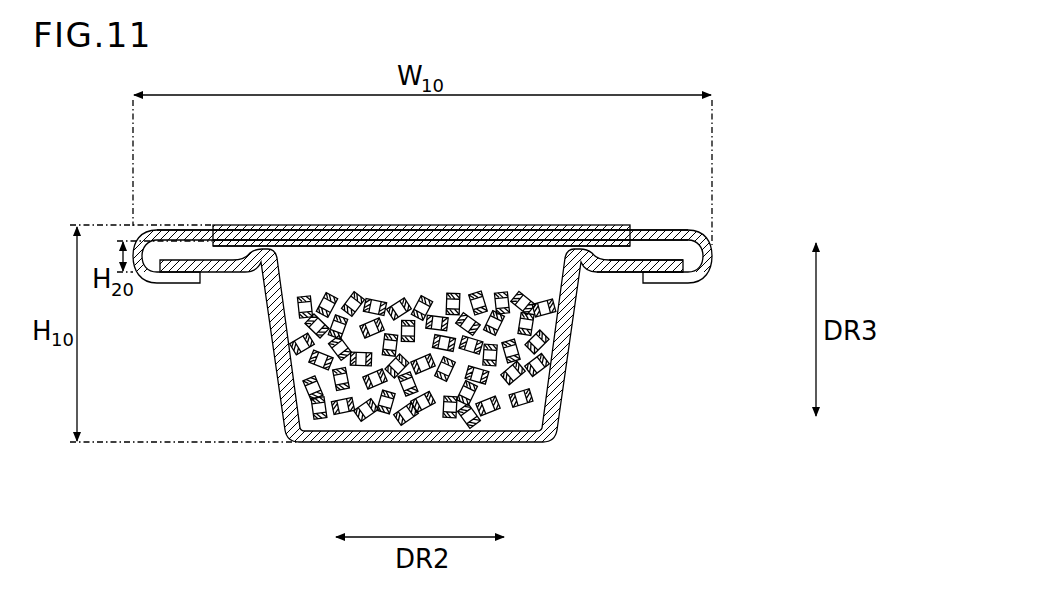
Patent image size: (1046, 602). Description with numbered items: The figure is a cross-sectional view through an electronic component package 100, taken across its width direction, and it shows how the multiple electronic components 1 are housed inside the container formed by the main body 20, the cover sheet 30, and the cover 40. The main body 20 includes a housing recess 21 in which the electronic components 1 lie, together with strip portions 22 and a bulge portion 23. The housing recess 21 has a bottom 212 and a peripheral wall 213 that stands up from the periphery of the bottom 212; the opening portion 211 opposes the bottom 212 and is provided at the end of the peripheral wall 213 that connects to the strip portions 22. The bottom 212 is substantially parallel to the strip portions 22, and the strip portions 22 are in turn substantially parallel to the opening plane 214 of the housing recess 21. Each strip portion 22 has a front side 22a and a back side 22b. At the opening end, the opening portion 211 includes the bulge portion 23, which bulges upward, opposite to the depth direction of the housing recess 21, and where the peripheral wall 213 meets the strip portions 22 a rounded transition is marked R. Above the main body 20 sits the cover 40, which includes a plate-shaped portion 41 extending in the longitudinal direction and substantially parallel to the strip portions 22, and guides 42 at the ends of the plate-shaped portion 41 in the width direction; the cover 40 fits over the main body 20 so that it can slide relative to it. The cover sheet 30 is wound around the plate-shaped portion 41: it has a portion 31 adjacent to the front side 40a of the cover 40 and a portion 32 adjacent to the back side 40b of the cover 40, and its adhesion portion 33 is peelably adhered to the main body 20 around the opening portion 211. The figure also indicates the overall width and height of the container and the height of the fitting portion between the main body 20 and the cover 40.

The electronic component package 100 is at (745, 164).
The electronic component 1 is at (479, 426).
The main body 20 is at (303, 503).
The housing recess 21 is at (295, 442).
The strip portion 22 is at (197, 276).
The front side 22a is at (665, 262).
The back side 22b is at (668, 273).
The bulge portion 23 is at (258, 273).
The opening portion 211 is at (265, 248).
The bottom 212 is at (360, 443).
The peripheral wall 213 is at (560, 375).
The opening plane 214 is at (387, 258).
The rounded corner R is at (576, 266).
The cover sheet 30 is at (632, 154).
The portion adjacent to front side of cover 31 is at (496, 226).
The portion adjacent to back side of cover 32 is at (540, 233).
The adhesion portion 33 is at (586, 240).
The cover 40 is at (223, 154).
The plate-shaped portion 41 is at (192, 229).
The guide 42 is at (148, 229).
The front side 40a is at (653, 229).
The back side 40b is at (697, 244).